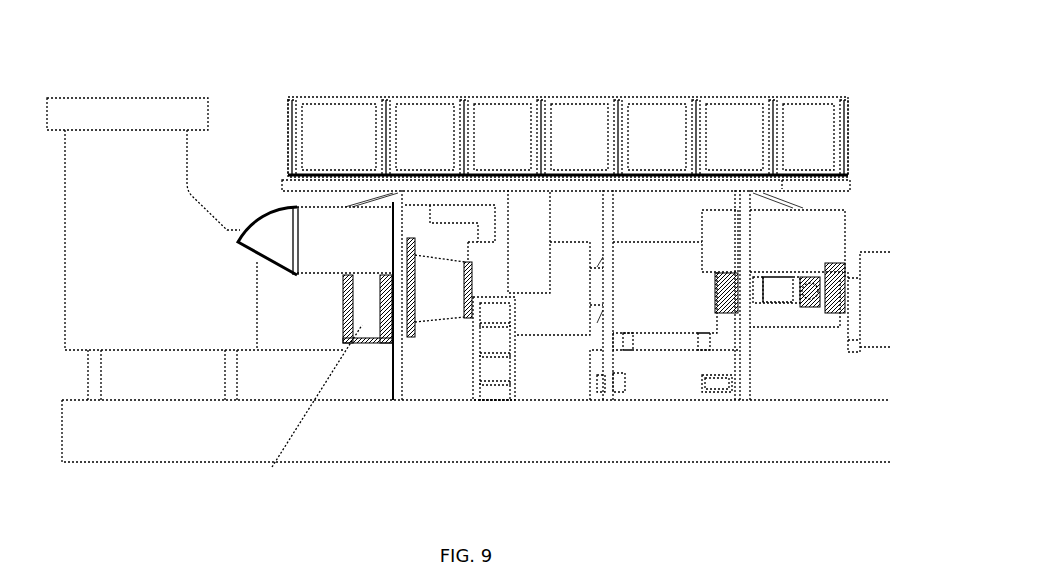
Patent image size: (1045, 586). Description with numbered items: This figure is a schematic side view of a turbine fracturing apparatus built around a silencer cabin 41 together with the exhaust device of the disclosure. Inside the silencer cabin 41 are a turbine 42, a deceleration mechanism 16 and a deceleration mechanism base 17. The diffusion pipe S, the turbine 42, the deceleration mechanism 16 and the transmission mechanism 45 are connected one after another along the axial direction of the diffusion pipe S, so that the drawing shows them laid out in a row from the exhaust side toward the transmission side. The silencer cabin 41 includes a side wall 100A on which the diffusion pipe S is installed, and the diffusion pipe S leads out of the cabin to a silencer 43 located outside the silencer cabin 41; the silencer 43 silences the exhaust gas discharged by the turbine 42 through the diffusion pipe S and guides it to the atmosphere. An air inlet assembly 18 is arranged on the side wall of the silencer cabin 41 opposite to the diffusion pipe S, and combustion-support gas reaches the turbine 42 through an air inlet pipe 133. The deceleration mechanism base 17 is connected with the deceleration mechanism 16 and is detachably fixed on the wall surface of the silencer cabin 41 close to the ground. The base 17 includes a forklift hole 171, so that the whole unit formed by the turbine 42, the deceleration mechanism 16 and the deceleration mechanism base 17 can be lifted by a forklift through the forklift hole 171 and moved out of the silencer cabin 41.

The silencer 43 is at (113, 142).
The silencer cabin 41 is at (295, 168).
The side wall 100A is at (403, 238).
The air inlet pipe 133 is at (522, 222).
The air inlet assembly 18 is at (715, 238).
The transmission mechanism 45 is at (763, 280).
The diffusion pipe S is at (427, 303).
The turbine 42 is at (465, 308).
The deceleration mechanism 16 is at (648, 308).
The deceleration mechanism base 17 is at (665, 363).
The forklift hole 171 is at (718, 382).